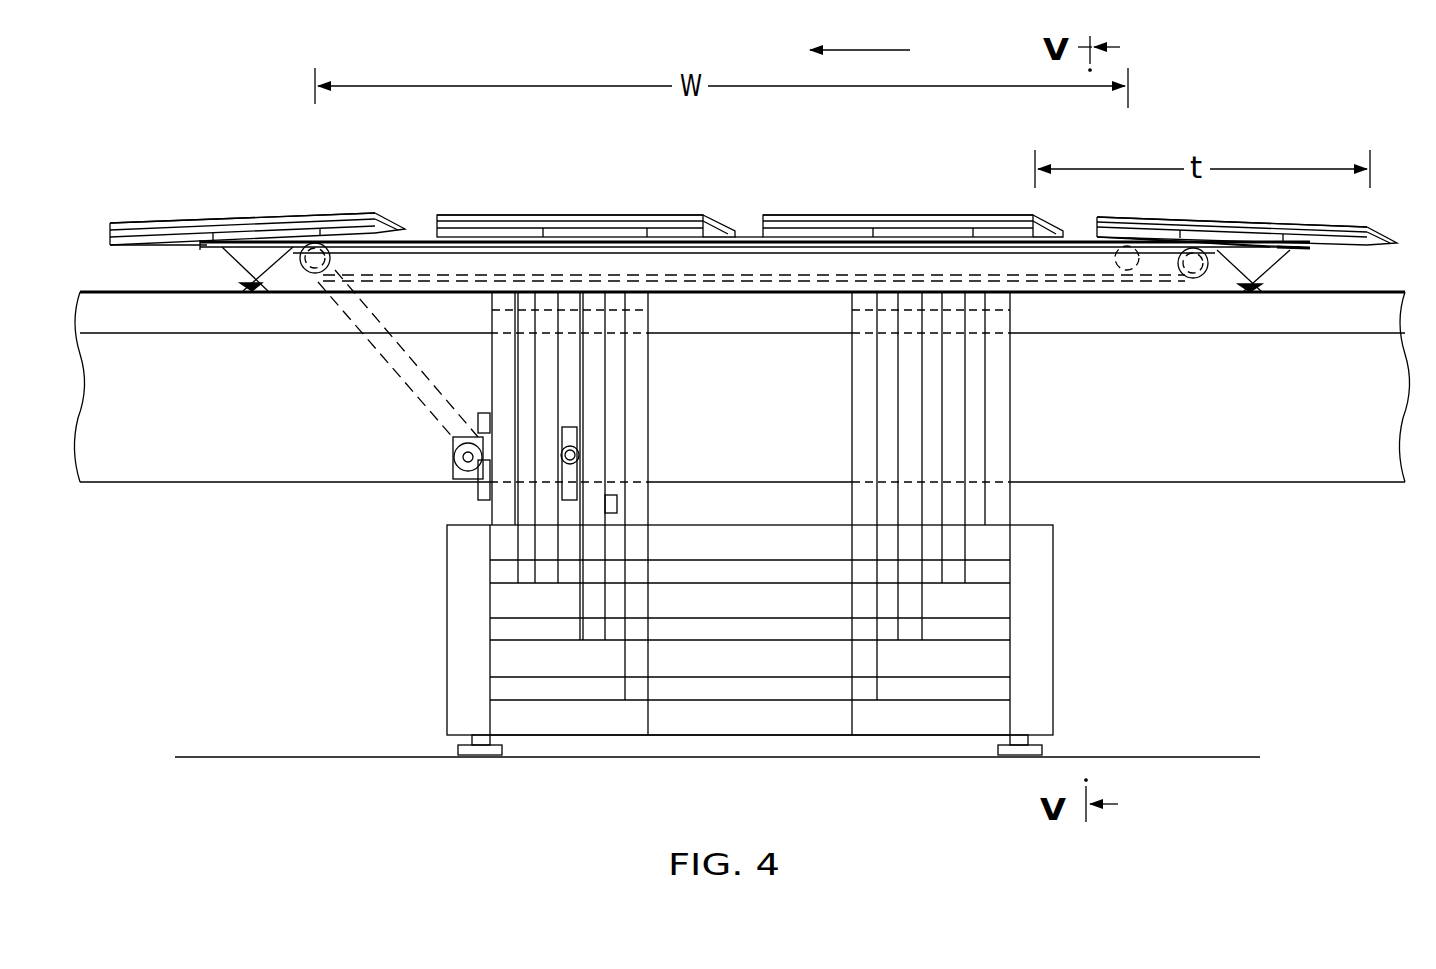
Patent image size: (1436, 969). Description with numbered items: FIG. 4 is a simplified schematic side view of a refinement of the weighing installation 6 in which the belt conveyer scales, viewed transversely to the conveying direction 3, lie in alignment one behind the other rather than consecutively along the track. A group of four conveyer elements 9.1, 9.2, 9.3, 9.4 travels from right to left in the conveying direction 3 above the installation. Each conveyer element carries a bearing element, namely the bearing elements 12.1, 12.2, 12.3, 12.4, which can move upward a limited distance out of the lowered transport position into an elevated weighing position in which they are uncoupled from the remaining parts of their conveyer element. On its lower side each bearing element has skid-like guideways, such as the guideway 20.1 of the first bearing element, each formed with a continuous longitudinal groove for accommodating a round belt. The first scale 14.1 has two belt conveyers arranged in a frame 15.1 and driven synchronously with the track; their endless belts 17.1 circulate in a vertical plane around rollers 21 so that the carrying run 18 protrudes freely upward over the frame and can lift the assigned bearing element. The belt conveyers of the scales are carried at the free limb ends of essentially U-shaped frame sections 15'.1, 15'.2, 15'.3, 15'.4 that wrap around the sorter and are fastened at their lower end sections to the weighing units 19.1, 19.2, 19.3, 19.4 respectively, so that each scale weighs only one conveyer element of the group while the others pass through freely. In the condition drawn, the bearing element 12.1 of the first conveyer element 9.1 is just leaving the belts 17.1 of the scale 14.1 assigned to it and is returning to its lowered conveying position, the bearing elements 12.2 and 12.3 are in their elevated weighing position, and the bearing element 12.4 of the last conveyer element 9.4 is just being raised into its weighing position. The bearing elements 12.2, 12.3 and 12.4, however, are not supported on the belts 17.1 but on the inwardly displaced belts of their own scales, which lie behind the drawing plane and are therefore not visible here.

The conveying direction 3 is at (902, 50).
The weighing installation 6 is at (336, 524).
The first conveyer element 9.1 is at (118, 223).
The second conveyer element 9.2 is at (500, 213).
The third conveyer element 9.3 is at (818, 213).
The last conveyer element 9.4 is at (1350, 223).
The bearing element of the first conveyer element 12.1 is at (322, 213).
The bearing element of the second conveyer element 12.2 is at (613, 215).
The bearing element of the third conveyer element 12.3 is at (915, 215).
The bearing element of the last conveyer element 12.4 is at (1208, 220).
The first scale 14.1 is at (338, 310).
The frame of the first scale 15.1 is at (435, 275).
The first frame section 15'.1 is at (746, 408).
The second frame section 15'.2 is at (730, 438).
The third frame section 15'.3 is at (740, 466).
The fourth frame section 15'.4 is at (730, 513).
The belts of the first scale 17.1 is at (420, 238).
The carrying run 18 is at (750, 240).
The first weighing unit 19.1 is at (766, 559).
The second weighing unit 19.2 is at (766, 616).
The third weighing unit 19.3 is at (766, 673).
The fourth weighing unit 19.4 is at (766, 733).
The guideway of the first bearing element 20.1 is at (132, 247).
The rollers 21 is at (315, 264).